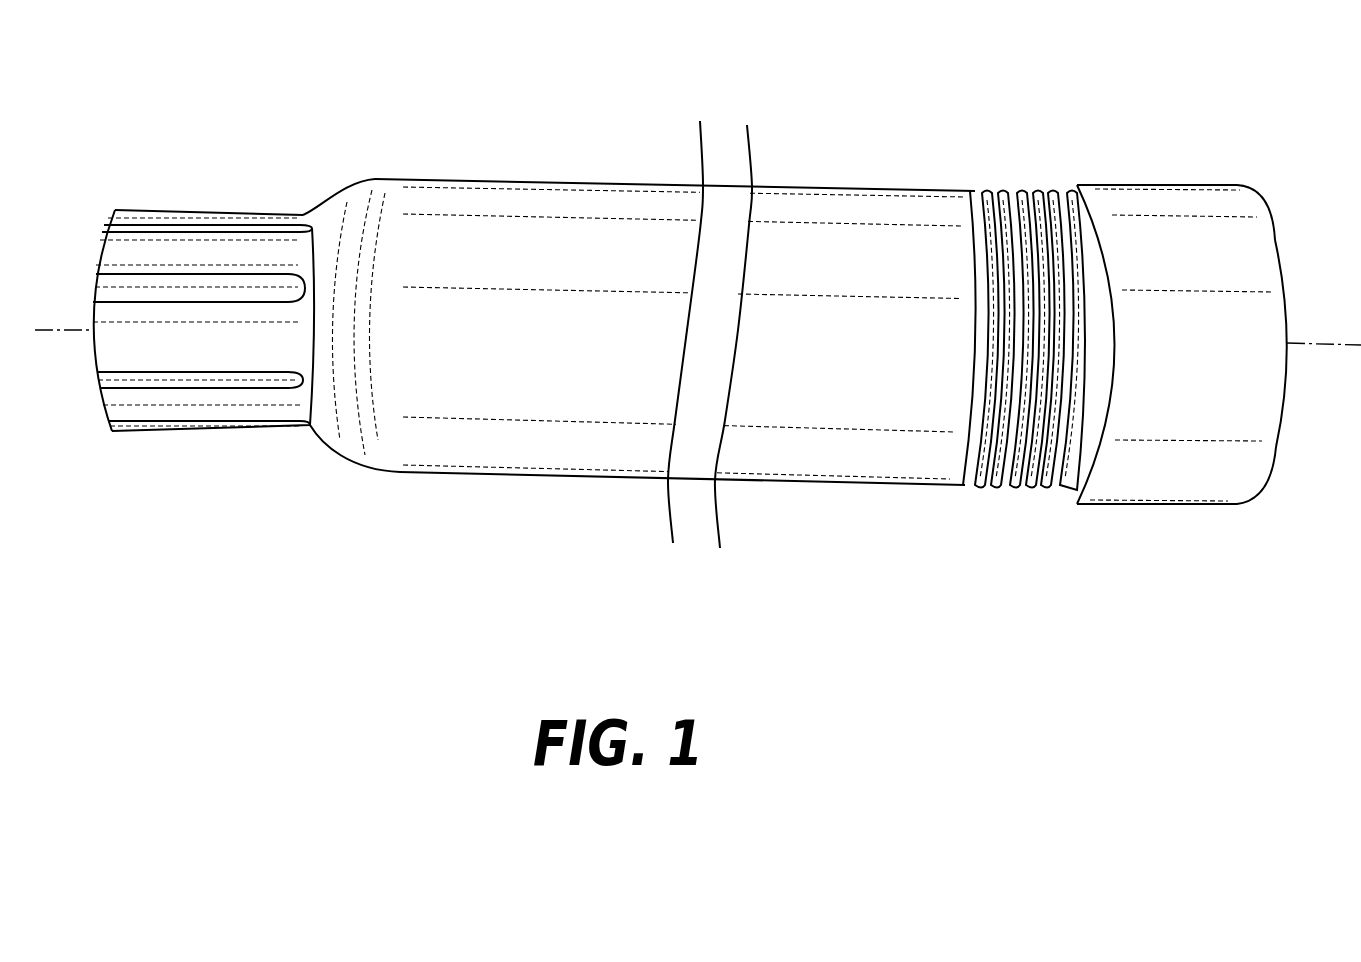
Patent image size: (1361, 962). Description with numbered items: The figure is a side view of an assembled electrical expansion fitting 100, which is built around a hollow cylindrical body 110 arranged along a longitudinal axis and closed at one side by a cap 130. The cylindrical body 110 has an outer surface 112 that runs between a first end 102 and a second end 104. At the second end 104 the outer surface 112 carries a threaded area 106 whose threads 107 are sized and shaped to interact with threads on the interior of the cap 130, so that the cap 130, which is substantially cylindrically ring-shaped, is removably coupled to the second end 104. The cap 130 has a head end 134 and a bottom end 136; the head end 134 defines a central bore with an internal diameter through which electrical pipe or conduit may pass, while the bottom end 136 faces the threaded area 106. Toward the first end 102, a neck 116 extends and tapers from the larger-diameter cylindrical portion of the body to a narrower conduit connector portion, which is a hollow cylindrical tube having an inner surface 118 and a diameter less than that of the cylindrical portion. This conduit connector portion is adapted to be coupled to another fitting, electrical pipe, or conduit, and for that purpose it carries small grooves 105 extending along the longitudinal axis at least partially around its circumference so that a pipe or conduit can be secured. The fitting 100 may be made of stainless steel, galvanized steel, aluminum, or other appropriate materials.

The electrical expansion fitting 100 is at (922, 106).
The first end 102 is at (96, 226).
The second end 104 is at (1264, 479).
The grooves 105 is at (240, 226).
The threaded area 106 is at (1040, 195).
The threads 107 is at (1025, 480).
The cylindrical body 110 is at (535, 167).
The outer surface 112 is at (854, 400).
The neck 116 is at (343, 457).
The inner surface 118 is at (92, 405).
The cap 130 is at (1207, 550).
The head end 134 is at (1286, 281).
The bottom end 136 is at (1078, 498).